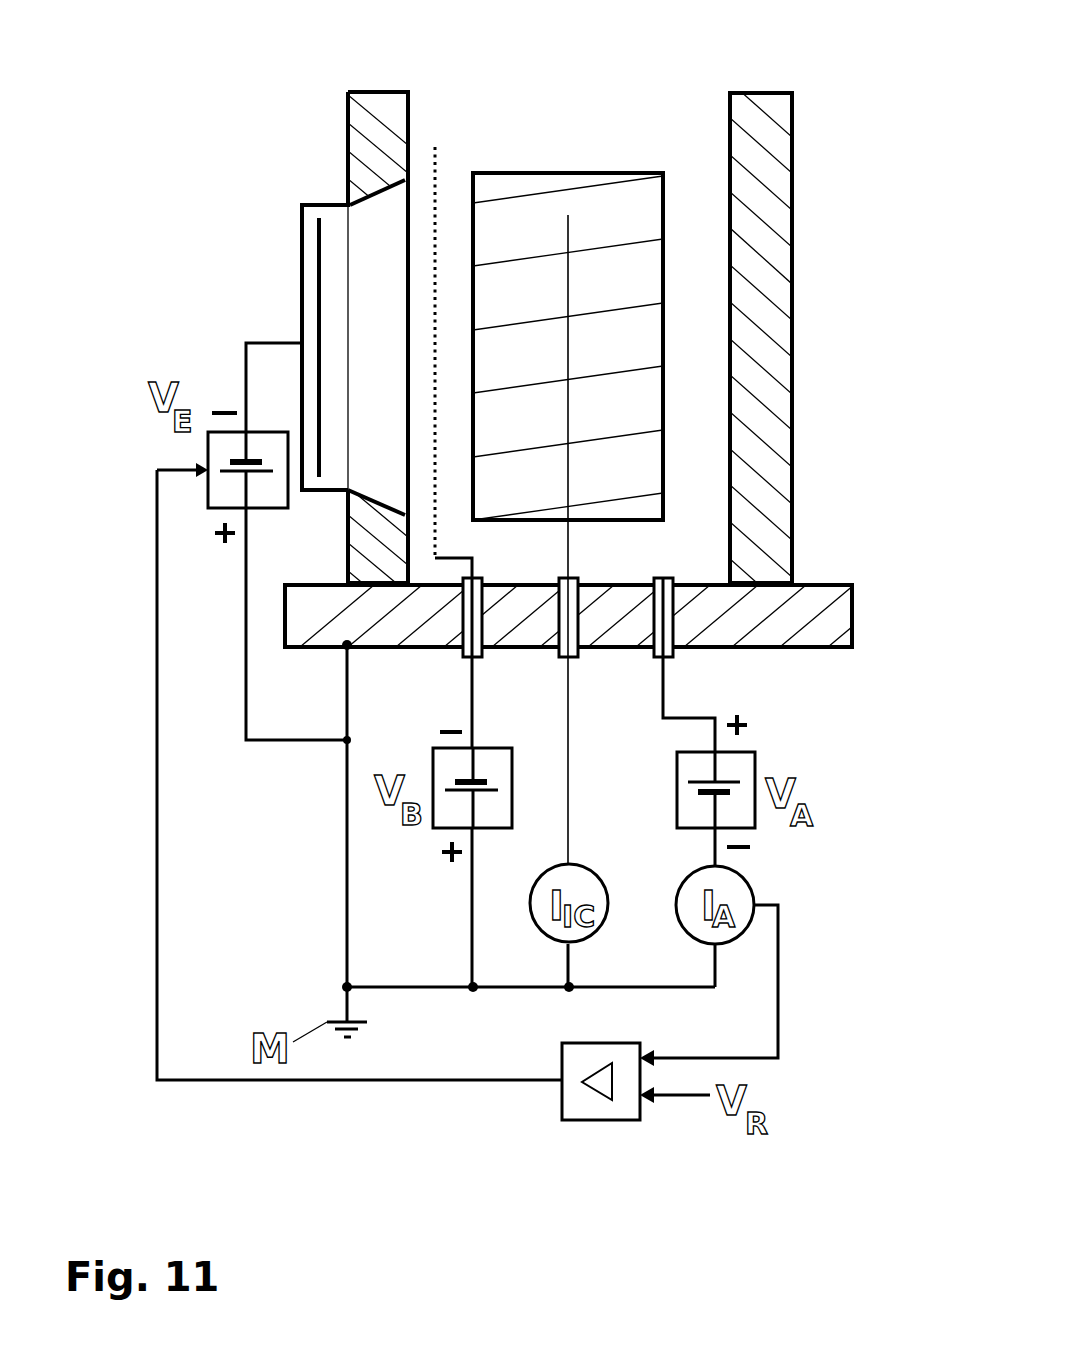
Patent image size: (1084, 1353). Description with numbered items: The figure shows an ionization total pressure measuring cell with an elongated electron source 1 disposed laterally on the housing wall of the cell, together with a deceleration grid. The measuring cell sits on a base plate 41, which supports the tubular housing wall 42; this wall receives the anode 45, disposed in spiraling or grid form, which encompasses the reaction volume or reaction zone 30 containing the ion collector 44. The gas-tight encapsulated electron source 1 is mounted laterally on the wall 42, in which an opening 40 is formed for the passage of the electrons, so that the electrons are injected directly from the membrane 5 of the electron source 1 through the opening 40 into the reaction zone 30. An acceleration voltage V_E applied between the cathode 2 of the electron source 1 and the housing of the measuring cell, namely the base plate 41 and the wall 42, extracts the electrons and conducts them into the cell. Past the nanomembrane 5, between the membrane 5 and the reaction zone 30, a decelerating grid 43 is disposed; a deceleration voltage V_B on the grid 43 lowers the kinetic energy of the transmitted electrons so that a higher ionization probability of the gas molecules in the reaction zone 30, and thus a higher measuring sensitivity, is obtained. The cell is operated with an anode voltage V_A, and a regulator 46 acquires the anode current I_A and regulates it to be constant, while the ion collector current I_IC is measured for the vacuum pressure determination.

The electron source 1 is at (280, 322).
The cathode 2 is at (317, 233).
The membrane 5 is at (348, 300).
The opening 40 is at (378, 310).
The deceleration grid 43 is at (437, 160).
The reaction zone 30 is at (630, 163).
The anode 45 is at (552, 168).
The ion collector 44 is at (568, 360).
The housing wall 42 is at (770, 128).
The base plate 41 is at (807, 628).
The regulator 46 is at (572, 1095).